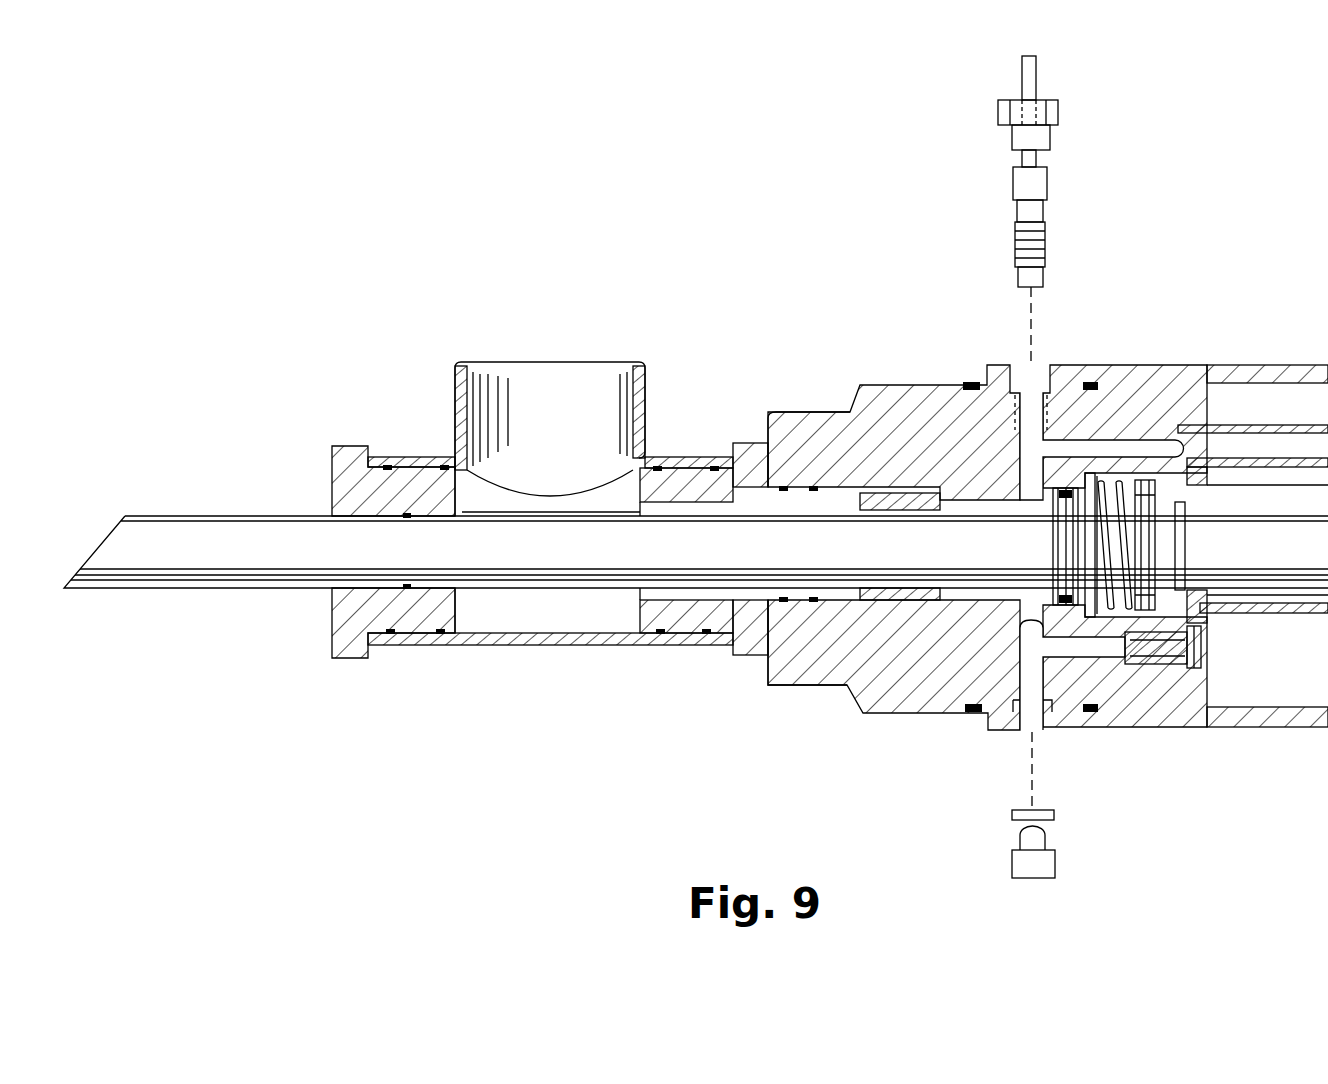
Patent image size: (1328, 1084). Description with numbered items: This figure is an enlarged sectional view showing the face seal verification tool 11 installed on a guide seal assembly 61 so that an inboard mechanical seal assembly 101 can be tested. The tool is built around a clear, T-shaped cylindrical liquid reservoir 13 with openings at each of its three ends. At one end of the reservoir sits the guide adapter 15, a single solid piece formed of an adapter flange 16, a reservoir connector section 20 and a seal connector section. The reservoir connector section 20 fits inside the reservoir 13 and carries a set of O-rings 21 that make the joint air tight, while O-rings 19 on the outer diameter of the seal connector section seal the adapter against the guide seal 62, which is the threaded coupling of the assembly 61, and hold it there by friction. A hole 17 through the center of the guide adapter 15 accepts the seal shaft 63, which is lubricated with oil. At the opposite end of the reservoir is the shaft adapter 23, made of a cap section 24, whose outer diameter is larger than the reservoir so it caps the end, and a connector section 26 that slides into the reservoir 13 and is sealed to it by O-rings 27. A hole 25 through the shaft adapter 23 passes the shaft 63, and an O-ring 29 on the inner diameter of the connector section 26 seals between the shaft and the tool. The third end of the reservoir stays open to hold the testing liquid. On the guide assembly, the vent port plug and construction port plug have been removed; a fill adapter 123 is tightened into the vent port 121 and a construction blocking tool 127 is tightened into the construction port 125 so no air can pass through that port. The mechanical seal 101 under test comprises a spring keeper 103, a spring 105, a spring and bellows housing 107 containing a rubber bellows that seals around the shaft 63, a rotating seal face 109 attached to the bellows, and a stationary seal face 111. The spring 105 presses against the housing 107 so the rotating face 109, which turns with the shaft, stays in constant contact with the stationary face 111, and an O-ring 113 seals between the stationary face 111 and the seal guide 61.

The face seal verification tool 11 is at (567, 326).
The liquid reservoir 13 is at (458, 362).
The guide adapter 15 is at (730, 676).
The adapter flange 16 is at (750, 443).
The hole 17 is at (703, 612).
The O-rings 19 is at (813, 610).
The reservoir connector section 20 is at (803, 487).
The O-rings 21 is at (705, 634).
The shaft adapter 23 is at (290, 667).
The cap section 24 is at (340, 446).
The hole 25 is at (430, 587).
The connector section 26 is at (418, 645).
The O-rings 27 is at (447, 457).
The O-ring 29 is at (430, 590).
The guide seal assembly 61 is at (950, 340).
The guide seal 62 is at (777, 410).
The seal shaft 63 is at (188, 516).
The inboard mechanical seal assembly 101 is at (1046, 540).
The spring keeper 103 is at (1157, 527).
The spring 105 is at (1180, 502).
The spring and bellows housing 107 is at (1144, 480).
The rotating seal face 109 is at (1112, 482).
The stationary seal face 111 is at (1140, 665).
The O-ring 113 is at (1089, 472).
The vent port 121 is at (1048, 730).
The fill adapter 123 is at (1057, 860).
The construction port 125 is at (1015, 362).
The construction blocking tool 127 is at (1050, 212).